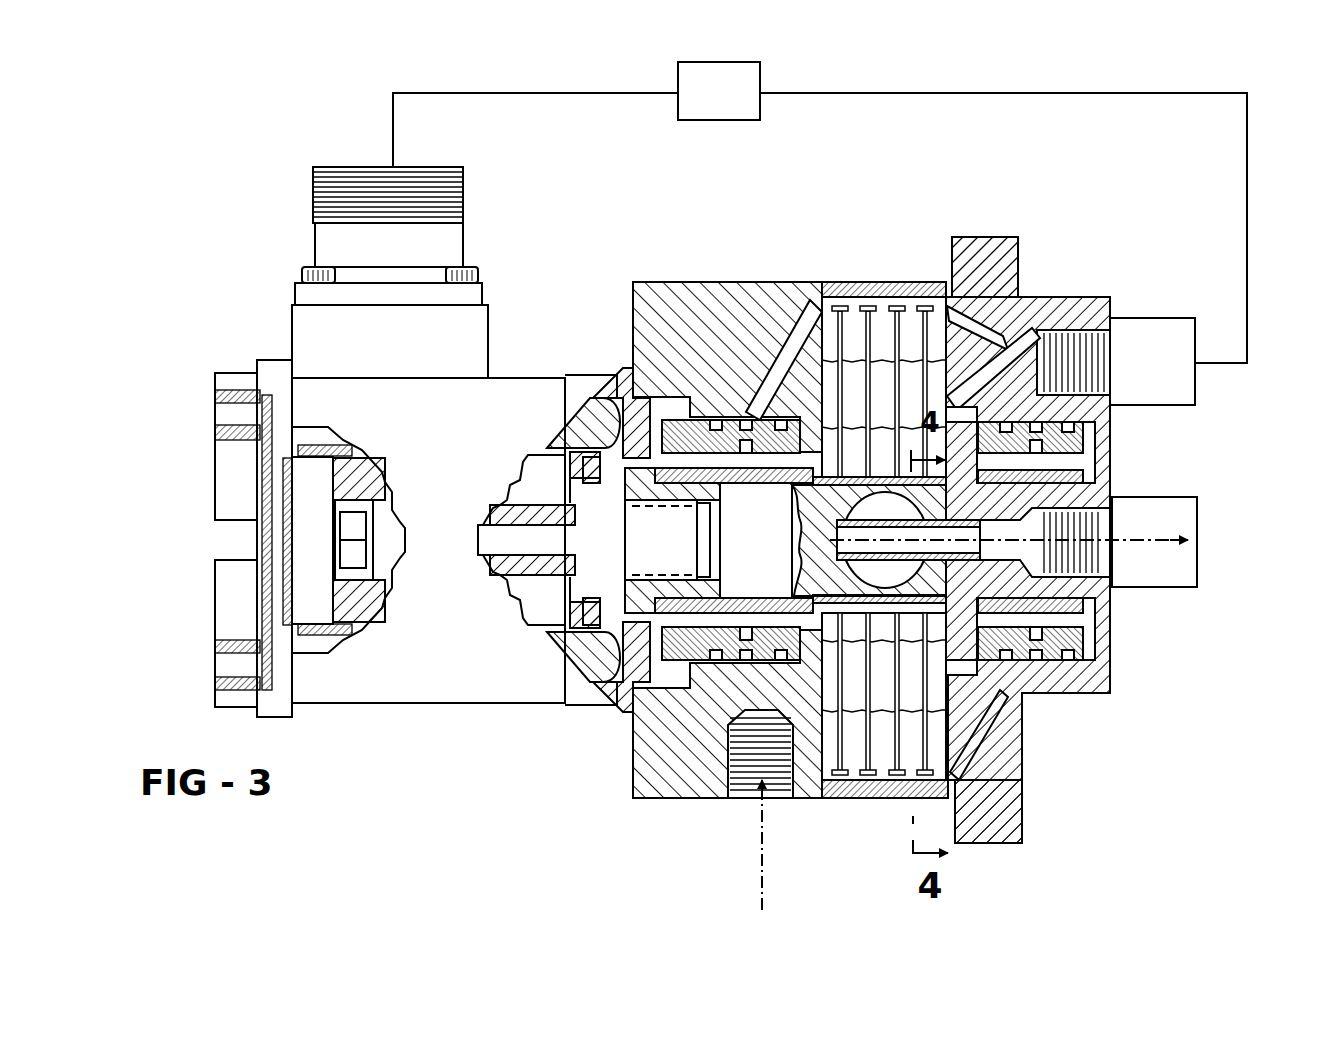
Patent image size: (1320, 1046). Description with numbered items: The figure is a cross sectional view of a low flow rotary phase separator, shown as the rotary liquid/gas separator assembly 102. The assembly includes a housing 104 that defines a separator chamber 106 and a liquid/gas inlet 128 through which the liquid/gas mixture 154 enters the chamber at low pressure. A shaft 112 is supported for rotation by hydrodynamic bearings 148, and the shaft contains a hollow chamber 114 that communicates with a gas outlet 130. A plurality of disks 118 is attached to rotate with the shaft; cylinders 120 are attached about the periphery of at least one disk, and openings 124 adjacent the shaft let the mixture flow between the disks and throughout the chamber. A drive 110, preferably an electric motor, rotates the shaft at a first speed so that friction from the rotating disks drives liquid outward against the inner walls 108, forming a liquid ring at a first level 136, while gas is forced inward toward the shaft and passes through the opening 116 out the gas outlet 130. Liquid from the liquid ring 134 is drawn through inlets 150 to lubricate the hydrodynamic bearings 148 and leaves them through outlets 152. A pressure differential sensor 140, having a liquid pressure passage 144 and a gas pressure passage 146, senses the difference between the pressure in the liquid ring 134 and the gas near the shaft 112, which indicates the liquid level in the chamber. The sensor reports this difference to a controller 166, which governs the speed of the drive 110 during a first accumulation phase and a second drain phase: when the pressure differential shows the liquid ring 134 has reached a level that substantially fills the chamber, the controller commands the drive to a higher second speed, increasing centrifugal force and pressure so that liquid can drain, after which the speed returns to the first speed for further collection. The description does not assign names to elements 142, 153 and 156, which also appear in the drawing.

The rotary liquid/gas separator assembly 102 is at (222, 316).
The housing 104 is at (672, 280).
The separator chamber 106 is at (855, 309).
The inner walls 108 is at (858, 304).
The drive 110 is at (458, 706).
The shaft 112 is at (908, 540).
The hollow chamber 114 is at (850, 537).
The opening 116 is at (810, 500).
The disks 118 is at (957, 293).
The cylinders 120 is at (920, 305).
The openings 124 is at (797, 587).
The liquid/gas inlet 128 is at (740, 792).
The gas outlet 130 is at (1197, 553).
The liquid ring 134 is at (997, 722).
The liquid ring first level 136 is at (1003, 798).
The pressure differential sensor 140 is at (1163, 325).
The threaded sensor port 142 is at (1110, 340).
The liquid pressure passage 144 is at (990, 320).
The gas pressure passage 146 is at (1010, 378).
The hydrodynamic bearings 148 is at (668, 430).
The inlets 150 is at (785, 330).
The outlets 152 is at (1063, 618).
The flow direction 153 is at (1180, 518).
The liquid/gas mixture 154 is at (762, 872).
The electrical connector 156 is at (466, 185).
The controller 166 is at (704, 103).